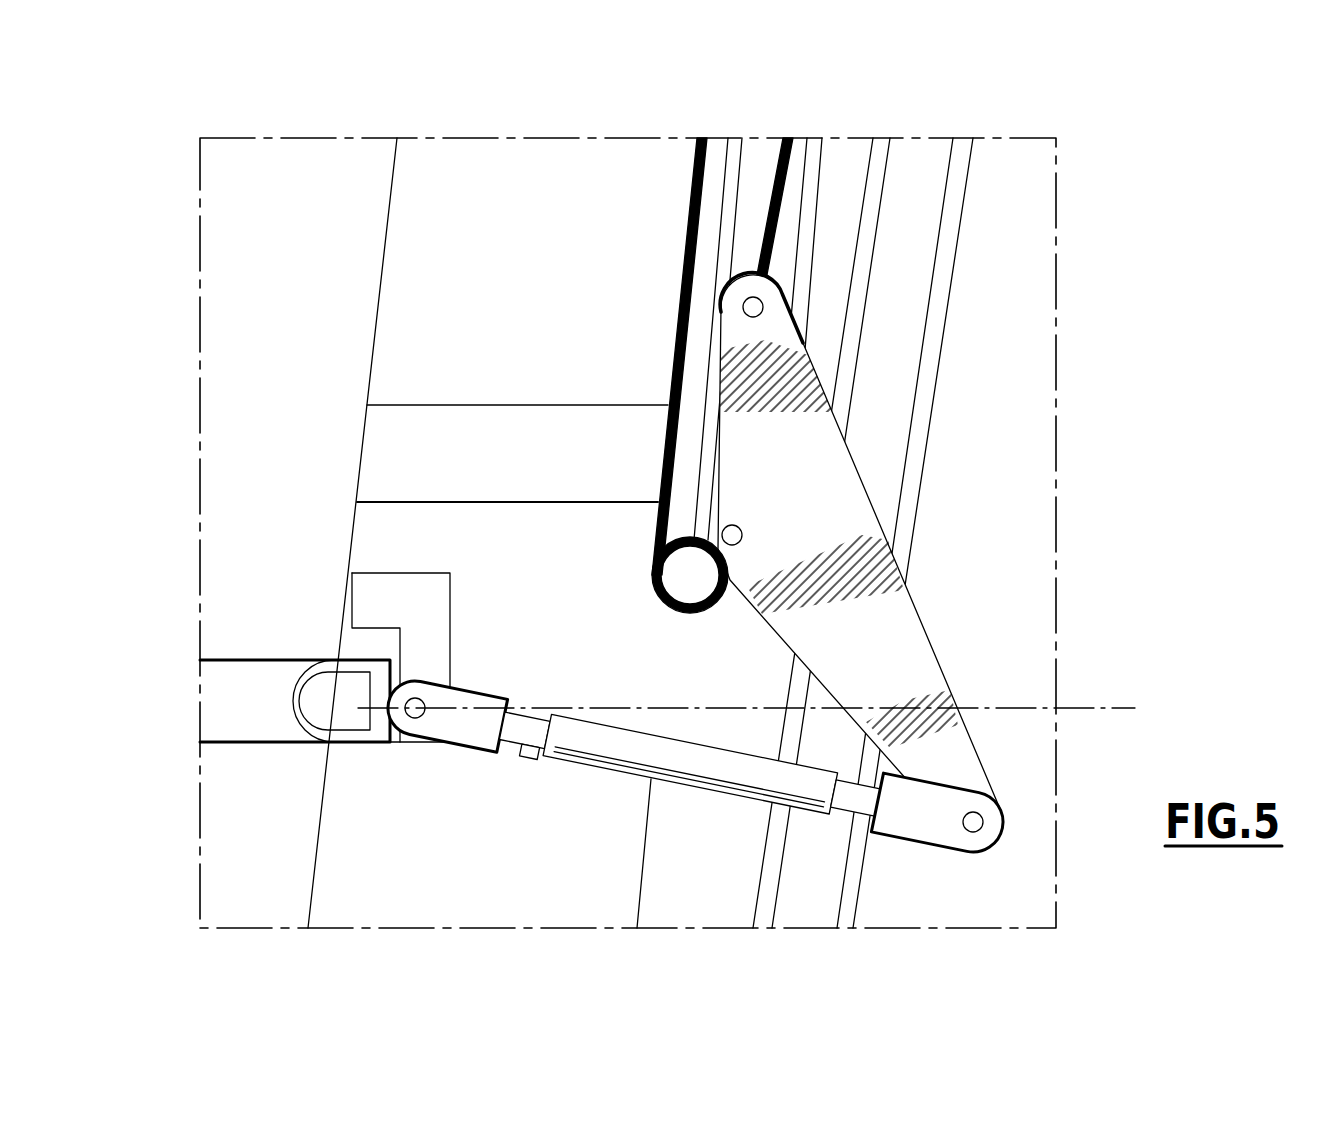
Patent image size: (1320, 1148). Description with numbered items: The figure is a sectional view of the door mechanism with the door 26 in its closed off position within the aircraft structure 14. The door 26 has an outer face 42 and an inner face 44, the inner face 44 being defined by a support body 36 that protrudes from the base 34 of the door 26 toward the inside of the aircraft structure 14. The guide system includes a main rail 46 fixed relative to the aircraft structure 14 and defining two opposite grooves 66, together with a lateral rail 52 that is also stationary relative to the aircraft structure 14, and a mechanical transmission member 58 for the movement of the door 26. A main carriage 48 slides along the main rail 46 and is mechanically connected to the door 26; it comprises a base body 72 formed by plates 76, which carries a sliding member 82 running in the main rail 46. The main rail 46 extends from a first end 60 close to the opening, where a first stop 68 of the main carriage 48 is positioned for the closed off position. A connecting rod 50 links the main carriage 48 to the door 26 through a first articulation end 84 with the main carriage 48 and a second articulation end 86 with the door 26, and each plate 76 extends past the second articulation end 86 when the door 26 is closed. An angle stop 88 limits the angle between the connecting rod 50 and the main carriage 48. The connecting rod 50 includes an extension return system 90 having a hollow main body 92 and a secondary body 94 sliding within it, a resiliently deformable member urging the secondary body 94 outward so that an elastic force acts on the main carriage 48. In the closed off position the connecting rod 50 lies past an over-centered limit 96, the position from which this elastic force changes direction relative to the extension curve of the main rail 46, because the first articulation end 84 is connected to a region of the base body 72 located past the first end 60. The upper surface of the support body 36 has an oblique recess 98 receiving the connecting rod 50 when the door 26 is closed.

The aircraft structure 14 is at (566, 128).
The door 26 is at (664, 892).
The base 34 is at (352, 660).
The support body 36 is at (768, 533).
The inner face 44 is at (646, 862).
The outer face 42 is at (230, 822).
The main rail 46 is at (747, 162).
The grooves 66 is at (763, 125).
The main carriage 48 is at (876, 552).
The connecting rod 50 is at (718, 808).
The lateral rail 52 is at (948, 118).
The mechanical transmission member 58 is at (682, 408).
The first end 60 is at (700, 608).
The first stop 68 is at (732, 604).
The base body 72 is at (876, 552).
The plates 76 is at (876, 552).
The sliding member 82 is at (772, 292).
The first articulation end 84 is at (976, 876).
The second articulation end 86 is at (404, 756).
The angle stop 88 is at (960, 867).
The extension return system 90 is at (628, 803).
The main body 92 is at (690, 760).
The secondary body 94 is at (515, 757).
The over-centered limit 96 is at (1113, 700).
The oblique recess 98 is at (553, 765).